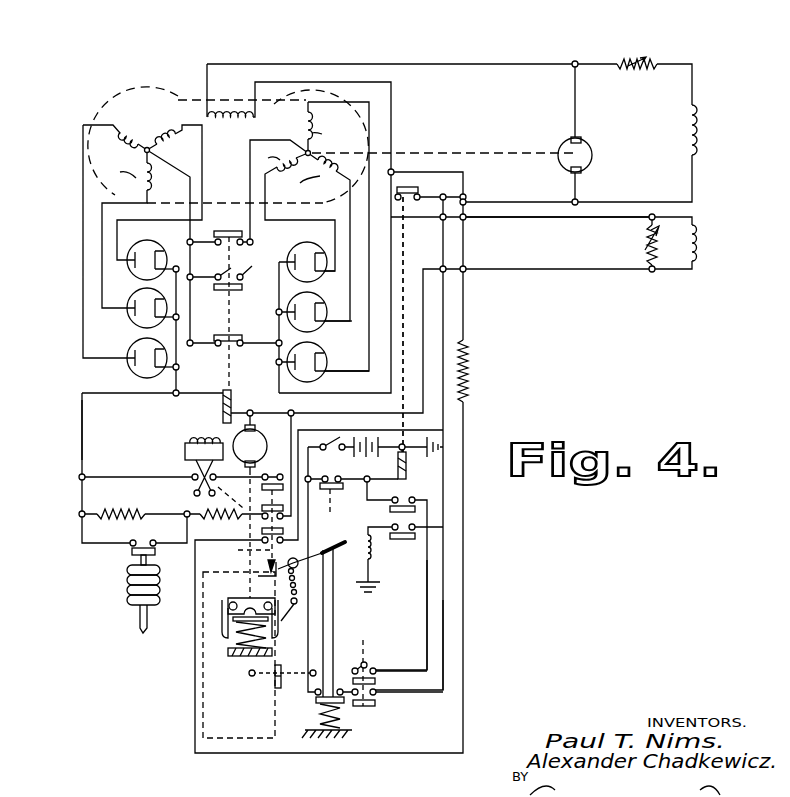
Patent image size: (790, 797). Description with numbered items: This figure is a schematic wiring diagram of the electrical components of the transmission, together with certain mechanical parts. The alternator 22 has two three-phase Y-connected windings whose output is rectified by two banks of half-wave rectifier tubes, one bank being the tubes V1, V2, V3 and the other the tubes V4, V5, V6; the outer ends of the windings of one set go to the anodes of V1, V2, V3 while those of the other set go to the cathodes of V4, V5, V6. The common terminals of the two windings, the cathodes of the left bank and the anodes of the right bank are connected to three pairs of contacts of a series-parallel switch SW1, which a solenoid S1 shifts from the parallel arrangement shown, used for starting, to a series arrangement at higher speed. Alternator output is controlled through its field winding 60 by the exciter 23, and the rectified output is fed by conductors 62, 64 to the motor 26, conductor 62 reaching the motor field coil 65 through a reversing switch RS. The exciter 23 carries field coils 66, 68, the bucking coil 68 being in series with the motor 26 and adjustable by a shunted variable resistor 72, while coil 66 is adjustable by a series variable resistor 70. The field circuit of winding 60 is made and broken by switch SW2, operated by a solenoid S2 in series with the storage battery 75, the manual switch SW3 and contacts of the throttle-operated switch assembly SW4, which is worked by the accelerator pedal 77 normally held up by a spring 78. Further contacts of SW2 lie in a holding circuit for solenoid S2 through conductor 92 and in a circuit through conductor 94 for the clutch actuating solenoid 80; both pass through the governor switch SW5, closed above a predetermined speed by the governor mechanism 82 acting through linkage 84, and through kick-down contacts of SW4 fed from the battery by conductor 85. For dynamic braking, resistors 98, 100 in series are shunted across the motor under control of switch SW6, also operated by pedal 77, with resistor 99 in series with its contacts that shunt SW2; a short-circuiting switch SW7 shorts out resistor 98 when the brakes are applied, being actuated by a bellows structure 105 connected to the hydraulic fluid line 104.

The alternator 22 is at (179, 90).
The exciter 23 is at (561, 141).
The motor 26 is at (250, 441).
The field winding 60 is at (245, 121).
The conductor 62 is at (82, 400).
The conductor 64 is at (528, 226).
The field coil of the motor 65 is at (204, 442).
The field coil 66 is at (700, 119).
The field coil 68 is at (700, 243).
The series variable resistor 70 is at (632, 60).
The shunted variable resistor 72 is at (648, 244).
The storage battery 75 is at (362, 455).
The accelerator pedal 77 is at (334, 552).
The spring 78 is at (298, 608).
The clutch actuating solenoid 80 is at (372, 563).
The governor mechanism 82 is at (239, 647).
The linkage 84 is at (252, 678).
The conductor 85 is at (316, 656).
The conductor 92 is at (425, 605).
The conductor 94 is at (414, 692).
The resistor 98 is at (100, 513).
The resistor 99 is at (470, 364).
The resistor 100 is at (222, 508).
The hydraulic fluid line 104 is at (138, 622).
The bellows structure 105 is at (125, 582).
The rectifier tube V1 is at (128, 366).
The rectifier tube V2 is at (130, 318).
The rectifier tube V3 is at (148, 250).
The rectifier tube V4 is at (312, 300).
The rectifier tube V5 is at (318, 352).
The rectifier tube V6 is at (304, 245).
The series-parallel switch SW1 is at (229, 312).
The switch SW2 is at (432, 189).
The manually operable switch SW3 is at (330, 463).
The throttle-operated switch assembly SW4 is at (378, 518).
The governor switch SW5 is at (372, 666).
The switch SW6 is at (253, 504).
The short-circuiting switch SW7 is at (128, 554).
The solenoid S1 is at (232, 398).
The solenoid S2 is at (408, 466).
The reversing switch RS is at (178, 478).